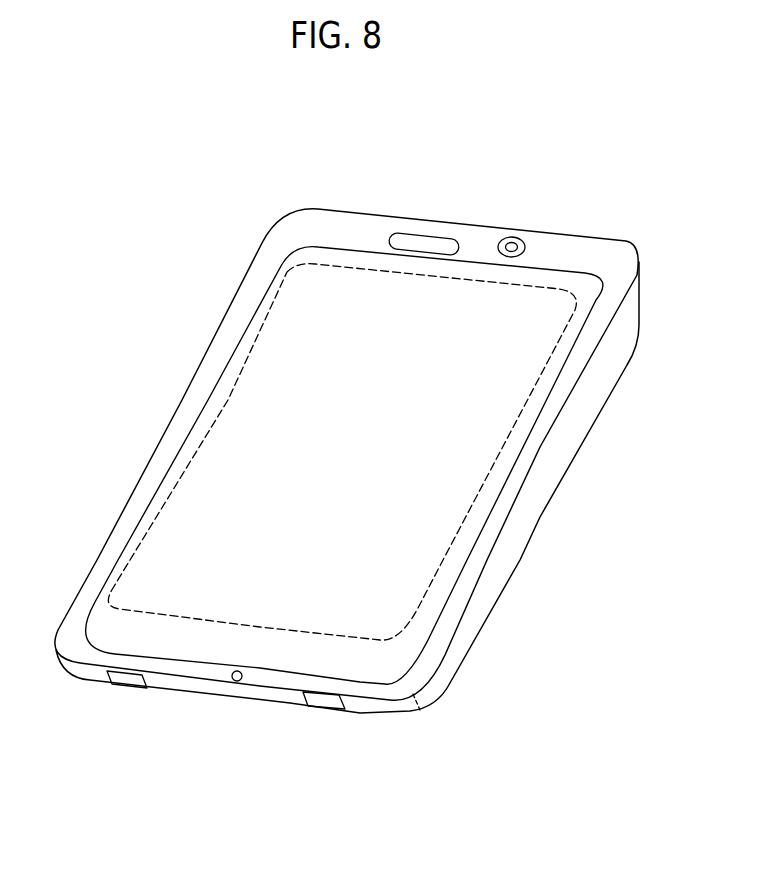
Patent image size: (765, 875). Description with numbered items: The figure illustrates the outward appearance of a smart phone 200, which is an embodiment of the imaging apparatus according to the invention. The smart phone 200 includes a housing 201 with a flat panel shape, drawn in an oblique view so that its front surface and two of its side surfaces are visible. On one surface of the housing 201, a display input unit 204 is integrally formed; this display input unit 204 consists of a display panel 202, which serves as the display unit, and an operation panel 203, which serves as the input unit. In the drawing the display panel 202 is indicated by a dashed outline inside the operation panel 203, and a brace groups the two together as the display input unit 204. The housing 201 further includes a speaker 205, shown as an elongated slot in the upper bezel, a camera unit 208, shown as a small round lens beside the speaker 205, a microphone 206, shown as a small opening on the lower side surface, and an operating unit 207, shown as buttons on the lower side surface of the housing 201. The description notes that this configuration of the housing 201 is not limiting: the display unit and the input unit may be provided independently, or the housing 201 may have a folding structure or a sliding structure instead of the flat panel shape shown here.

The smart phone 200 is at (163, 286).
The housing 201 is at (299, 220).
The display panel 202 is at (542, 287).
The operation panel 203 is at (582, 273).
The display input unit 204 is at (656, 147).
The speaker 205 is at (427, 234).
The microphone 206 is at (236, 682).
The operating unit 207 is at (130, 689).
The camera unit 208 is at (513, 237).